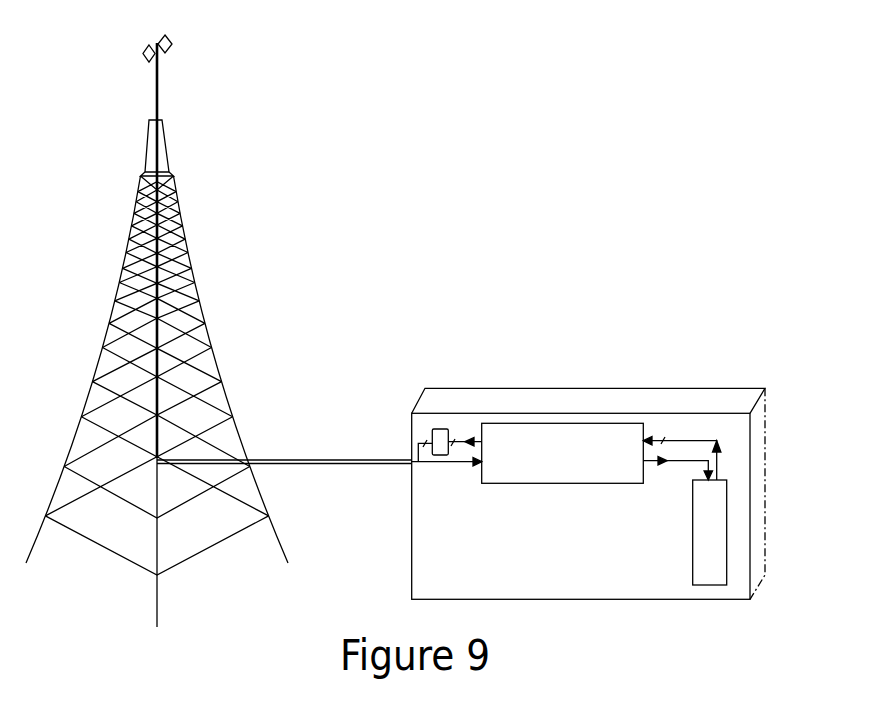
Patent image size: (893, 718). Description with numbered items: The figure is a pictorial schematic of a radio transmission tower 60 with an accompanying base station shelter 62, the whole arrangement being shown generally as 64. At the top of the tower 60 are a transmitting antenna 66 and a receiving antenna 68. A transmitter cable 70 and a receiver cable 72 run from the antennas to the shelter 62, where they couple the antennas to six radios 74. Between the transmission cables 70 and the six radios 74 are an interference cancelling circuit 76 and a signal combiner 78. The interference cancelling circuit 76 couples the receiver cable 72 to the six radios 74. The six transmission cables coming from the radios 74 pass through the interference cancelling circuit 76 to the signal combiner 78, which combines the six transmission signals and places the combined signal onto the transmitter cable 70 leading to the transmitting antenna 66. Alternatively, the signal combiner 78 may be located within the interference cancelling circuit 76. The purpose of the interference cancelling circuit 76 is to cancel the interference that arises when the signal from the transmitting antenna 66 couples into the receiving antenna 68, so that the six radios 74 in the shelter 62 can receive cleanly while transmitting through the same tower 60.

The radio transmission tower 60 is at (183, 227).
The base station shelter 62 is at (510, 390).
The radio transmission tower and shelter arrangement 64 is at (745, 77).
The transmitting antenna 66 is at (171, 40).
The receiving antenna 68 is at (144, 51).
The transmitter cable 70 is at (298, 458).
The receiver cable 72 is at (385, 464).
The six radios 74 is at (693, 552).
The interference cancelling circuit 76 is at (555, 483).
The signal combiner 78 is at (440, 429).